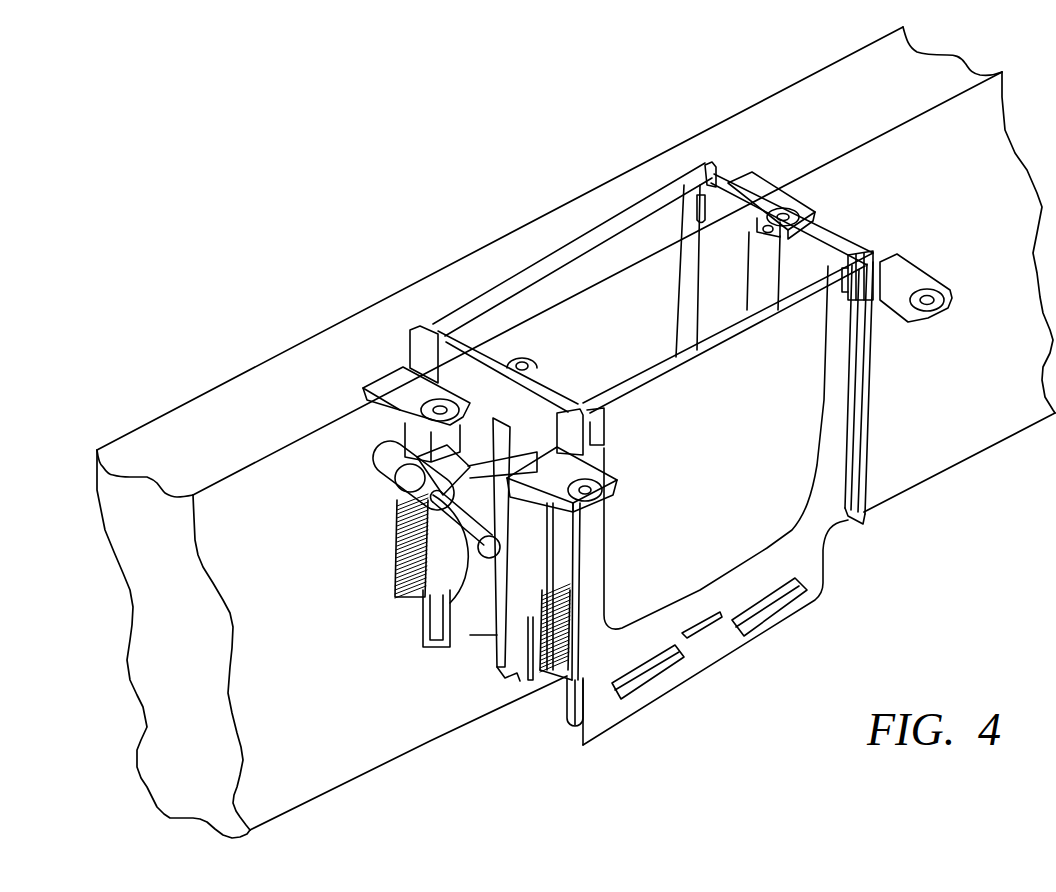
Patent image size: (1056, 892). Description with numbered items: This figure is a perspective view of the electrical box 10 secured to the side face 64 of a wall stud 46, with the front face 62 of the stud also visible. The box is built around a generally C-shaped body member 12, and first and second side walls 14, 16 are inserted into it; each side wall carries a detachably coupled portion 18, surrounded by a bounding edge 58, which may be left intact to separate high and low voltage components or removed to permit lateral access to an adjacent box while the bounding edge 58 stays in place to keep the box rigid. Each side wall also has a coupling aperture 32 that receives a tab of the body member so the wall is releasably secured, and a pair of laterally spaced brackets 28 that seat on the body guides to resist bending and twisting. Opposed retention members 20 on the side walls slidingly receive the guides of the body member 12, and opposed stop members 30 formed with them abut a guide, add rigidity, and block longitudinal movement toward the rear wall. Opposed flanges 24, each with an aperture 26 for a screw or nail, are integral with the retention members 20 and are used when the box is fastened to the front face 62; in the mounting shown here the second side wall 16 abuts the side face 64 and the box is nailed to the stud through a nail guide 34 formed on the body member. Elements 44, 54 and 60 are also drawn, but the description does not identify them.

The electrical box 10 is at (518, 207).
The body member 12 is at (460, 672).
The first side wall 14 is at (882, 402).
The second side wall 16 is at (463, 292).
The detachably coupled portion 18 is at (580, 301).
The retention member 20 is at (877, 250).
The opposed flange 24 is at (653, 330).
The aperture 26 is at (787, 208).
The laterally spaced bracket 28 is at (653, 687).
The stop member 30 is at (855, 255).
The coupling aperture 32 is at (705, 610).
The nail guide 34 is at (387, 462).
The boss 44 is at (533, 360).
The wall stud 46 is at (576, 432).
The clamp bracket 54 is at (430, 620).
The bounding edge 58 is at (597, 710).
The threaded rod 60 is at (393, 558).
The front face 62 is at (205, 436).
The side face 64 is at (265, 628).